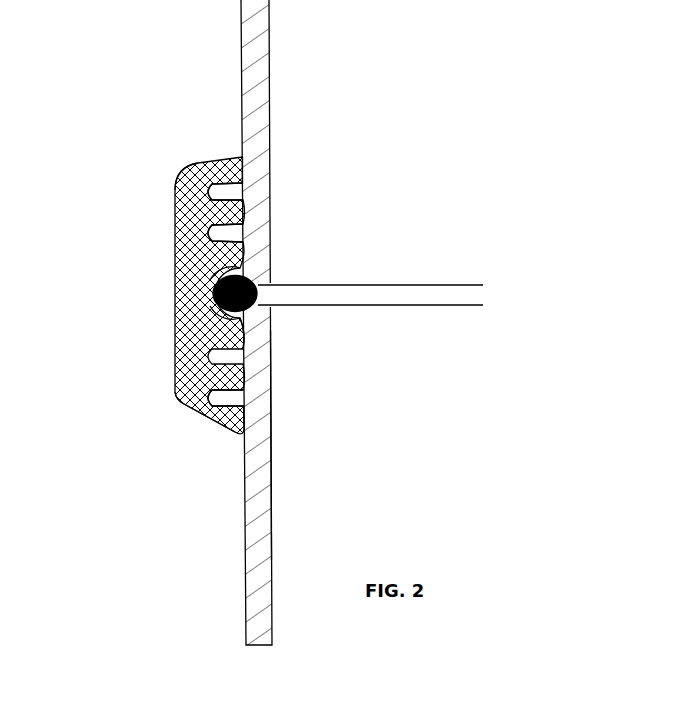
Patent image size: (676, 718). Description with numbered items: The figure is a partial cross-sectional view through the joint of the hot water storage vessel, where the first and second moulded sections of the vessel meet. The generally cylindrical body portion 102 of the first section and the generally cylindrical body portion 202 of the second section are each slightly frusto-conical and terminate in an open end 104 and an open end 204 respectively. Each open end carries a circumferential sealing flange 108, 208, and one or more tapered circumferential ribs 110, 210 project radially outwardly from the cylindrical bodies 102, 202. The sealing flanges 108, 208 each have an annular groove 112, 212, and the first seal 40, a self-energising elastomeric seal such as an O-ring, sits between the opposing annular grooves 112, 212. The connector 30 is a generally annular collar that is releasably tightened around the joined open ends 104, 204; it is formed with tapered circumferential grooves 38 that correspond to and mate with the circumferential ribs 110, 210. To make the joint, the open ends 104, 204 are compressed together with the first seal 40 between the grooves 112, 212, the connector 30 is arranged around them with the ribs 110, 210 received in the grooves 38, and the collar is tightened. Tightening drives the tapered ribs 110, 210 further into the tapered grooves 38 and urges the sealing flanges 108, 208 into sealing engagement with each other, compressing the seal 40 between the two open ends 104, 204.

The generally cylindrical body portion 102 is at (270, 112).
The generally cylindrical body portion 202 is at (268, 479).
The connector 30 is at (172, 228).
The tapered circumferential grooves 38 is at (196, 184).
The circumferential sealing flange 108 is at (207, 277).
The circumferential sealing flange 208 is at (204, 315).
The tapered circumferential rib 110 is at (226, 190).
The annular groove 112 is at (242, 271).
The first seal 40 is at (262, 292).
The open end 104 is at (420, 268).
The open end 204 is at (422, 328).
The tapered circumferential rib 210 is at (221, 403).
The annular groove 212 is at (241, 316).